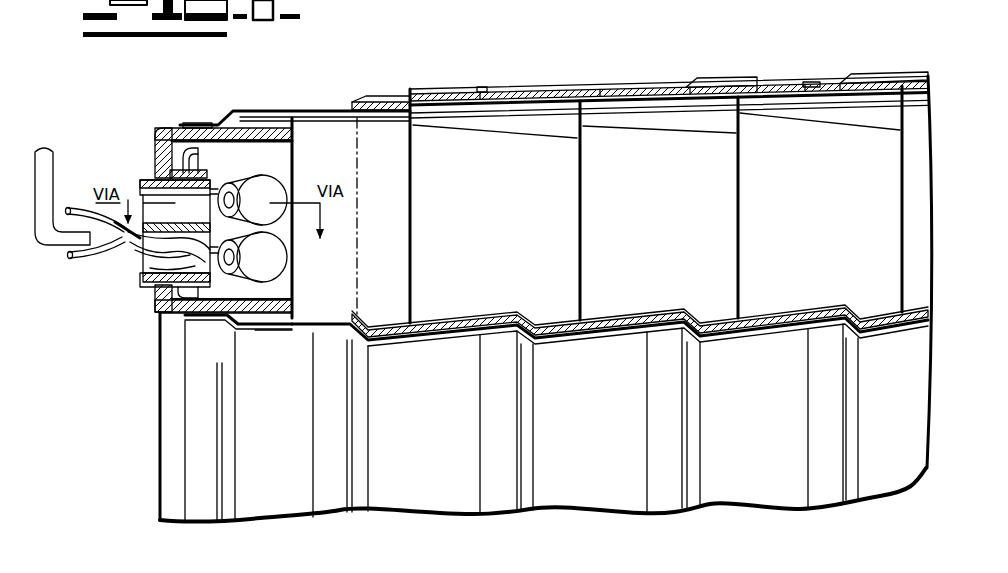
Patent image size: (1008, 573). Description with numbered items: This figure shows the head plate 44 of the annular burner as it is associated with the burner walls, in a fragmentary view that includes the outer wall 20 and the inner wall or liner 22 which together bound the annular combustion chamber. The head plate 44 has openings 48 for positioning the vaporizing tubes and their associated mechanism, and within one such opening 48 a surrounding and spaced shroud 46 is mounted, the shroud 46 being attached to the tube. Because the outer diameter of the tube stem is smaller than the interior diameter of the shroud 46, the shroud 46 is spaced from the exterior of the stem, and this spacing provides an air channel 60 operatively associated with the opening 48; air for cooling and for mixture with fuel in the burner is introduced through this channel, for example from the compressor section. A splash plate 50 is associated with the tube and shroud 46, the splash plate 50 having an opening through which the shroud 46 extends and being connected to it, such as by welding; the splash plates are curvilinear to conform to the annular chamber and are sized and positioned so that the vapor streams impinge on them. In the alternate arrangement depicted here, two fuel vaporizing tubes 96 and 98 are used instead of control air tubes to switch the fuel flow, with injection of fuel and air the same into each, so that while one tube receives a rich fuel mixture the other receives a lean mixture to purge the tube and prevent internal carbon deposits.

The outer wall 20 is at (712, 75).
The inner wall or liner 22 is at (596, 336).
The head plate 44 is at (166, 143).
The shroud 46 is at (210, 173).
The opening 48 is at (156, 182).
The splash plate 50 is at (193, 146).
The air channel 60 is at (157, 286).
The fuel vaporizing tube 96 is at (282, 183).
The fuel vaporizing tube 98 is at (284, 268).